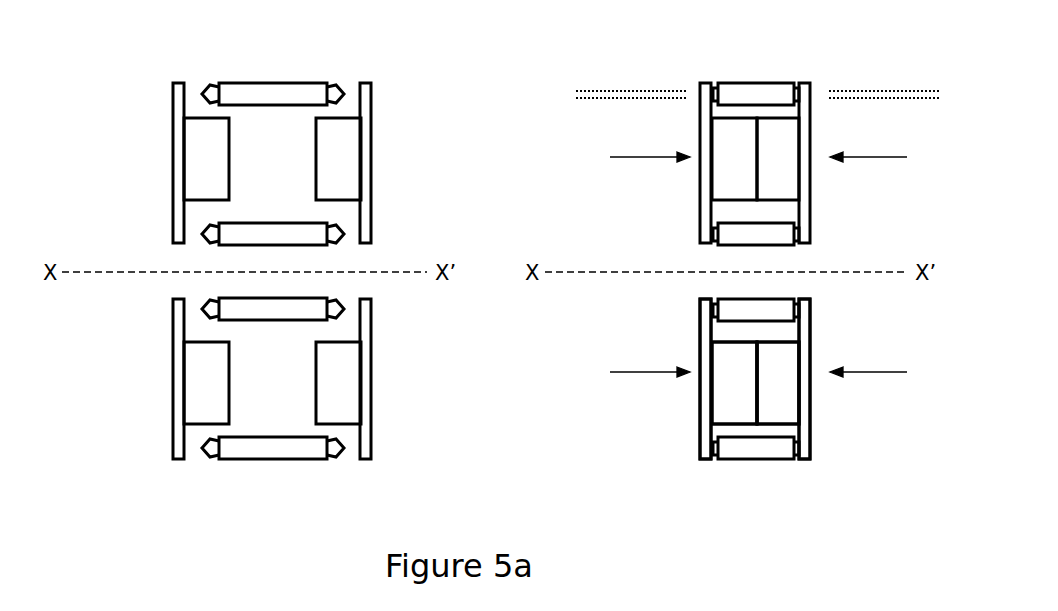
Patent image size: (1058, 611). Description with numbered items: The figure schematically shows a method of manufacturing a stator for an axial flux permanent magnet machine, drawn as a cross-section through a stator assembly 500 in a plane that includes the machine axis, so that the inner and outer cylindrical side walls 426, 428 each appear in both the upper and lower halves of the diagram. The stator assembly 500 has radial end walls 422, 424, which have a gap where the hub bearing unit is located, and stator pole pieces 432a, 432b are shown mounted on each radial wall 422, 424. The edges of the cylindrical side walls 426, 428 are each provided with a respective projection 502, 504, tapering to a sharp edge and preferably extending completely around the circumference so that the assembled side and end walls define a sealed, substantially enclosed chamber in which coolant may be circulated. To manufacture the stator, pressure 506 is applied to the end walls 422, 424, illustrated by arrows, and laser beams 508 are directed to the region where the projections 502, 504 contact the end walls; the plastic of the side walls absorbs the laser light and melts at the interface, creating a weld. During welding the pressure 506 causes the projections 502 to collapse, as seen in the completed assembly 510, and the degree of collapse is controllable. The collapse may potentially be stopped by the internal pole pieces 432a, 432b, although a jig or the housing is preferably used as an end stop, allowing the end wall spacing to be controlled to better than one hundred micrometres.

The radial end wall 422 is at (179, 103).
The radial end wall 424 is at (366, 103).
The inner cylindrical side wall 426 is at (230, 236).
The outer cylindrical side wall 428 is at (267, 90).
The stator pole piece 432a is at (200, 144).
The stator pole piece 432b is at (343, 152).
The stator assembly 500 is at (151, 513).
The projection 502 is at (338, 90).
The projection 504 is at (213, 88).
The pressure 506 is at (760, 265).
The laser beam 508 is at (758, 80).
The completed assembly 510 is at (680, 525).